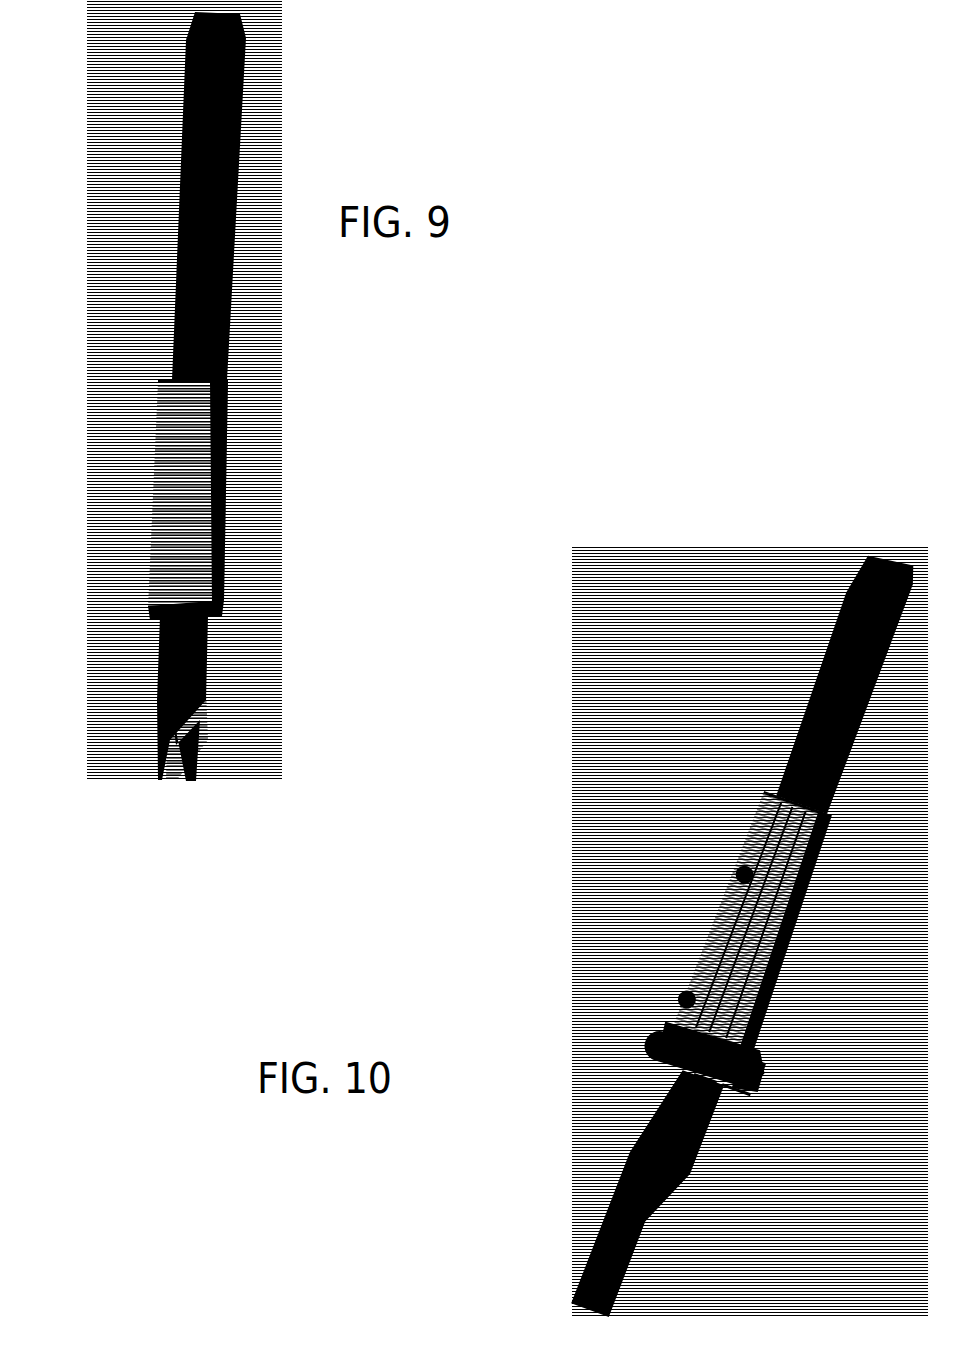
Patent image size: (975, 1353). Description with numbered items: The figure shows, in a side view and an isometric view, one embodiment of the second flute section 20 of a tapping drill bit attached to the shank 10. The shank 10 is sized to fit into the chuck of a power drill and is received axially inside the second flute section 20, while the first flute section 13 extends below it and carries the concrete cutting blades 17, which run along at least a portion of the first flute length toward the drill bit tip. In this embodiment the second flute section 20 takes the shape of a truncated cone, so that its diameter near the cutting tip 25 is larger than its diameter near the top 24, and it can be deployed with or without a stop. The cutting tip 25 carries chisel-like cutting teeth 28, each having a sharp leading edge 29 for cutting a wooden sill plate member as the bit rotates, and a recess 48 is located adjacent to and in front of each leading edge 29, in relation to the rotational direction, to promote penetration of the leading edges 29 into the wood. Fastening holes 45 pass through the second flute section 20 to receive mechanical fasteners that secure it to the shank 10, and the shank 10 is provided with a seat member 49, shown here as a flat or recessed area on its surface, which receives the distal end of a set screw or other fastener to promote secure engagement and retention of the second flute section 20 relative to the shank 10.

In FIG. 9, the shank 10 is at (200, 195).
In FIG. 10, the shank 10 is at (825, 680).
In FIG. 9, the first flute section 13 is at (182, 735).
In FIG. 10, the first flute section 13 is at (643, 1285).
In FIG. 10, the concrete cutting blades 17 is at (608, 1242).
In FIG. 9, the second flute section 20 is at (165, 437).
In FIG. 10, the second flute section 20 is at (758, 823).
In FIG. 9, the top 24 is at (175, 382).
In FIG. 10, the top 24 is at (775, 802).
In FIG. 9, the cutting tip 25 is at (215, 613).
In FIG. 10, the cutting tip 25 is at (647, 1040).
In FIG. 10, the cutting teeth 28 is at (757, 1068).
In FIG. 9, the leading edge 29 is at (152, 624).
In FIG. 10, the leading edge 29 is at (743, 1092).
In FIG. 10, the fastening holes 45 is at (680, 1000).
In FIG. 10, the recess 48 is at (783, 1010).
In FIG. 10, the seat member 49 is at (705, 1075).